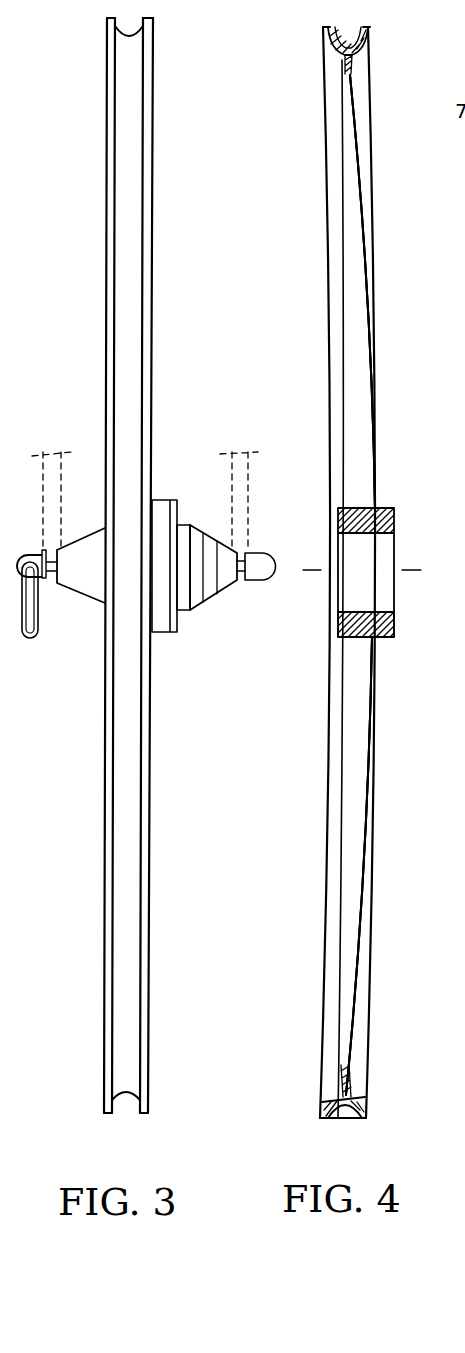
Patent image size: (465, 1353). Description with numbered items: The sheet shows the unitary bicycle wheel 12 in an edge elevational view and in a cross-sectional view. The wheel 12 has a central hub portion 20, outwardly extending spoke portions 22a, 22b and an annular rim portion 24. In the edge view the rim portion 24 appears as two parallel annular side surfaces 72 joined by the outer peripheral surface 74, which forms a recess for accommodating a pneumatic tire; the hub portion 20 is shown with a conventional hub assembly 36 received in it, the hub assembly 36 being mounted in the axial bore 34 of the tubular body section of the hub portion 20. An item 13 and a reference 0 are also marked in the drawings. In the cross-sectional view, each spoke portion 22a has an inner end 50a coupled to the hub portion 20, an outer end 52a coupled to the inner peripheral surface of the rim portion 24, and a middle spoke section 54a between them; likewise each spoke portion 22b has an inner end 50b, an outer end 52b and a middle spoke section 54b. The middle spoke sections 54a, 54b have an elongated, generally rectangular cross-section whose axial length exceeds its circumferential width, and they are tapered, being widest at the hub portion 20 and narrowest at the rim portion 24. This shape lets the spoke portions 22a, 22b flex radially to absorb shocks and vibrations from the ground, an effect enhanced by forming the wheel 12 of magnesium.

In FIG. 3, the bicycle wheel 12 is at (93, 105).
In FIG. 4, the bicycle wheel 12 is at (306, 118).
In FIG. 3, the crank handle / drive member 13 is at (65, 476).
In FIG. 3, the hub portion 20 is at (166, 486).
In FIG. 4, the hub portion 20 is at (387, 492).
In FIG. 3, the rim portion 24 is at (159, 36).
In FIG. 4, the rim portion 24 is at (376, 38).
In FIG. 3, the hub assembly 36 is at (212, 522).
In FIG. 3, the annular side surfaces 72 is at (103, 1102).
In FIG. 4, the annular side surfaces 72 is at (320, 1110).
In FIG. 3, the outer peripheral surface 74 is at (117, 1113).
In FIG. 4, the outer peripheral surface 74 is at (345, 1116).
In FIG. 4, the outer end 52a is at (350, 86).
In FIG. 4, the outer end 52b is at (345, 1060).
In FIG. 4, the middle spoke section 54a is at (355, 240).
In FIG. 4, the middle spoke section 54b is at (350, 852).
In FIG. 4, the spoke portion 22a is at (358, 306).
In FIG. 4, the spoke portion 22b is at (350, 750).
In FIG. 4, the inner end 50a is at (365, 480).
In FIG. 4, the inner end 50b is at (363, 648).
In FIG. 4, the center reference line 0 is at (410, 563).
In FIG. 4, the axial bore 34 is at (396, 615).